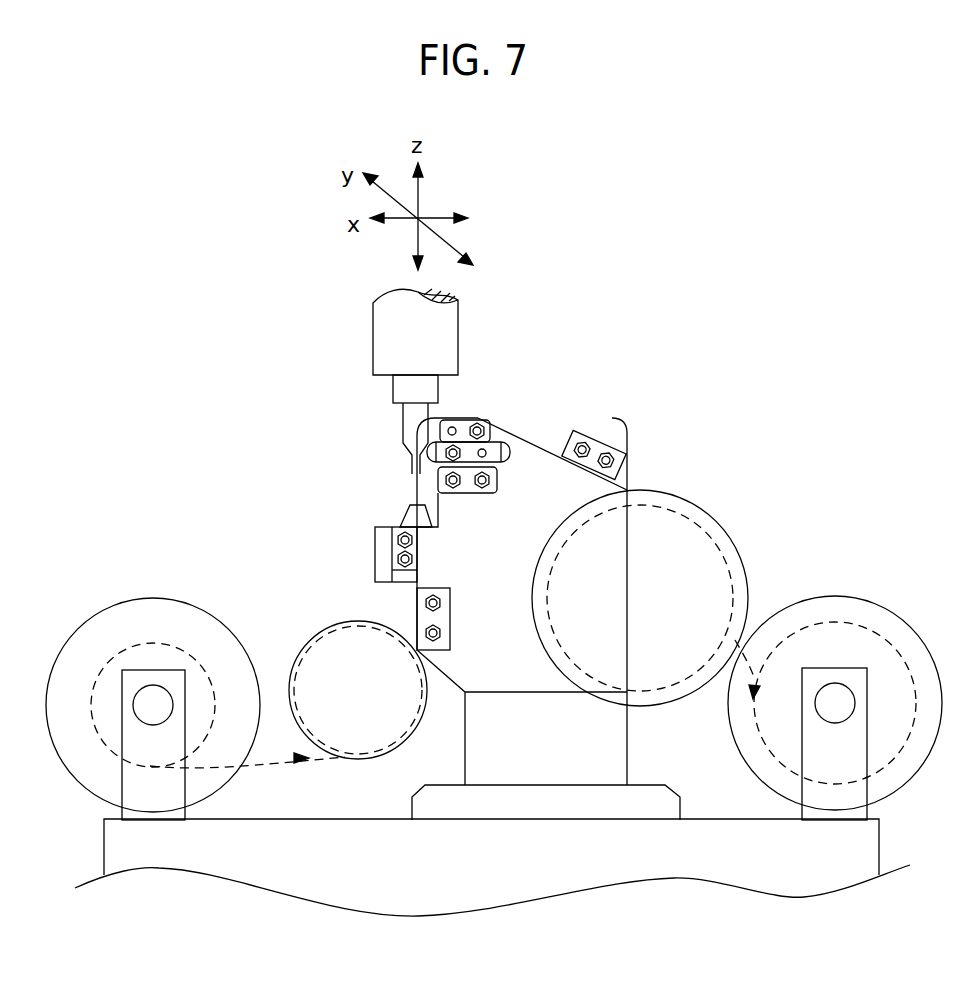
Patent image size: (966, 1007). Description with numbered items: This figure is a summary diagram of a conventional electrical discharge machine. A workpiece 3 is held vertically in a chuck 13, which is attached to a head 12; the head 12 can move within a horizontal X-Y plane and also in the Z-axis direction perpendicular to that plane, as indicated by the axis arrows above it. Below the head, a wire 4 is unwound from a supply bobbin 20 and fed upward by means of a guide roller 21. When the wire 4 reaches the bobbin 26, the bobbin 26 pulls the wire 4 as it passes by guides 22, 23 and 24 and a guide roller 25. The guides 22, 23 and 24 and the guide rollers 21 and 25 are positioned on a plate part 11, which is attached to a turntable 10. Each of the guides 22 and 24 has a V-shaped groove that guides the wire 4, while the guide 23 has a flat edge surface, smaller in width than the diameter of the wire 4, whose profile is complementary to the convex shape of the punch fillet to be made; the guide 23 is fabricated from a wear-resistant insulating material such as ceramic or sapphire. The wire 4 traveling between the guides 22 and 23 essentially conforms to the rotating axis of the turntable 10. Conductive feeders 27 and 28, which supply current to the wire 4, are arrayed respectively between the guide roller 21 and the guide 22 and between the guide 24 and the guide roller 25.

The workpiece 3 is at (404, 414).
The wire 4 is at (265, 772).
The turntable 10 is at (567, 880).
The plate part 11 is at (607, 428).
The head 12 is at (450, 352).
The chuck 13 is at (398, 387).
The supply bobbin 20 is at (90, 636).
The guide roller 21 is at (328, 658).
The guide 22 is at (408, 512).
The guide 23 is at (466, 462).
The guide 24 is at (462, 424).
The guide roller 25 is at (688, 500).
The bobbin 26 is at (836, 597).
The conductive feeder 27 is at (421, 620).
The conductive feeder 28 is at (596, 448).